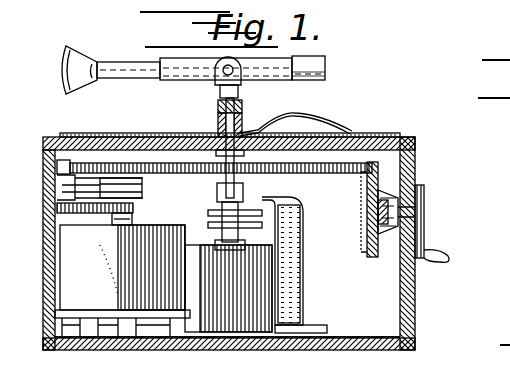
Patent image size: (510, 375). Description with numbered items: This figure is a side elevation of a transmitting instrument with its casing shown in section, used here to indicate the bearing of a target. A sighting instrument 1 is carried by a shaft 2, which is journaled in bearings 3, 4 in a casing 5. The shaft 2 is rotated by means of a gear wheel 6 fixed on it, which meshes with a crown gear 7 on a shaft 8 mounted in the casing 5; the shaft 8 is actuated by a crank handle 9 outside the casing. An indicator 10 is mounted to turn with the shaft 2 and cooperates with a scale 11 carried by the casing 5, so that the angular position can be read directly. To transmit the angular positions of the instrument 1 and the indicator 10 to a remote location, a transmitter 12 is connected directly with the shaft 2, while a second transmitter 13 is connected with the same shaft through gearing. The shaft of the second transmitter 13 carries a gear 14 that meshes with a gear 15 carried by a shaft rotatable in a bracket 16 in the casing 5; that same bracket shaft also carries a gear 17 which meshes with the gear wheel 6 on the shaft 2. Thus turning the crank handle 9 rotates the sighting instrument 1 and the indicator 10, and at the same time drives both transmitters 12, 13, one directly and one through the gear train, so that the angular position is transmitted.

The sighting instrument 1 is at (327, 68).
The shaft 2 is at (222, 136).
The bearing 3 is at (241, 134).
The bearing 4 is at (237, 190).
The casing 5 is at (418, 147).
The gear wheel 6 is at (316, 173).
The crown gear 7 is at (369, 218).
The shaft 8 is at (370, 207).
The crank handle 9 is at (430, 252).
The indicator 10 is at (305, 118).
The scale 11 is at (392, 134).
The transmitter 12 is at (256, 265).
The second transmitter 13 is at (122, 281).
The gear 14 is at (135, 209).
The gear 15 is at (82, 214).
The bracket 16 is at (99, 177).
The gear 17 is at (86, 164).